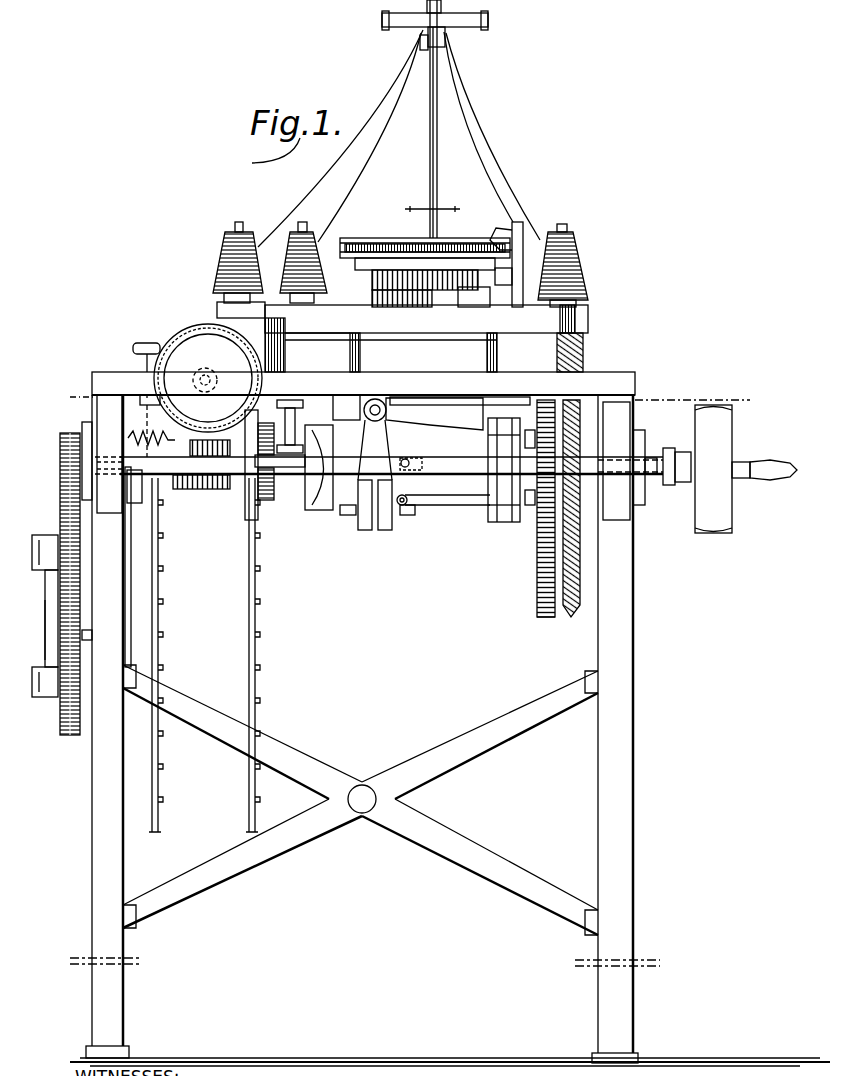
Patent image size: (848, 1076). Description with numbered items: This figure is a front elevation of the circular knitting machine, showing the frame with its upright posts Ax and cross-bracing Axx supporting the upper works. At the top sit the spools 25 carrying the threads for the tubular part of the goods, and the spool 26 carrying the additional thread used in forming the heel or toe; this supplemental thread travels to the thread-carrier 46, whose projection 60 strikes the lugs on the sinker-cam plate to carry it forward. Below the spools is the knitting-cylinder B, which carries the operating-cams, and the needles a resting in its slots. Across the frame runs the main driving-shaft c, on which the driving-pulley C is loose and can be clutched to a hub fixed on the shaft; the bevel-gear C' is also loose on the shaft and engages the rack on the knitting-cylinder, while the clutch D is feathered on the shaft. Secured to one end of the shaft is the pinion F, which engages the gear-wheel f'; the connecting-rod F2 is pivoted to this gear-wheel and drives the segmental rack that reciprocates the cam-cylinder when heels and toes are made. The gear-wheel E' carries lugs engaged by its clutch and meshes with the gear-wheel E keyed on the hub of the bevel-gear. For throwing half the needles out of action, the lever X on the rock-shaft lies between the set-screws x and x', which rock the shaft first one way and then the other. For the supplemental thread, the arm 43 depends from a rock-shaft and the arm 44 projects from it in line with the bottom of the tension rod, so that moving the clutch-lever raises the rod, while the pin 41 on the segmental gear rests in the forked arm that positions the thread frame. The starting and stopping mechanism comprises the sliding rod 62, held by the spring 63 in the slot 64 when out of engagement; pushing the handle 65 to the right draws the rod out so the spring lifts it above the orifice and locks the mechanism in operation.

The spools 25 is at (222, 262).
The spool 26 is at (580, 265).
The thread-carrier 46 is at (520, 238).
The projection 60 is at (506, 284).
The needles a is at (372, 287).
The knitting-cylinder B is at (474, 297).
The handle 65 is at (133, 349).
The set-screw x is at (402, 467).
The spring 63 is at (152, 436).
The pinion F is at (60, 471).
The gear-wheel f' is at (38, 616).
The connecting-rod F2 is at (46, 643).
The slot 64 is at (113, 467).
The rod 62 is at (240, 462).
The lever X is at (444, 474).
The set-screw x' is at (379, 526).
The arm 43 is at (407, 500).
The arm 44 is at (430, 468).
The pin 41 is at (447, 508).
The clutch D is at (490, 522).
The gear-wheel E is at (529, 508).
The gear-wheel E' is at (533, 628).
The bevel-gear C' is at (565, 521).
The driving-pulley C is at (730, 469).
The main driving-shaft c is at (650, 478).
The frame post Ax is at (98, 787).
The cross brace Axx is at (400, 773).